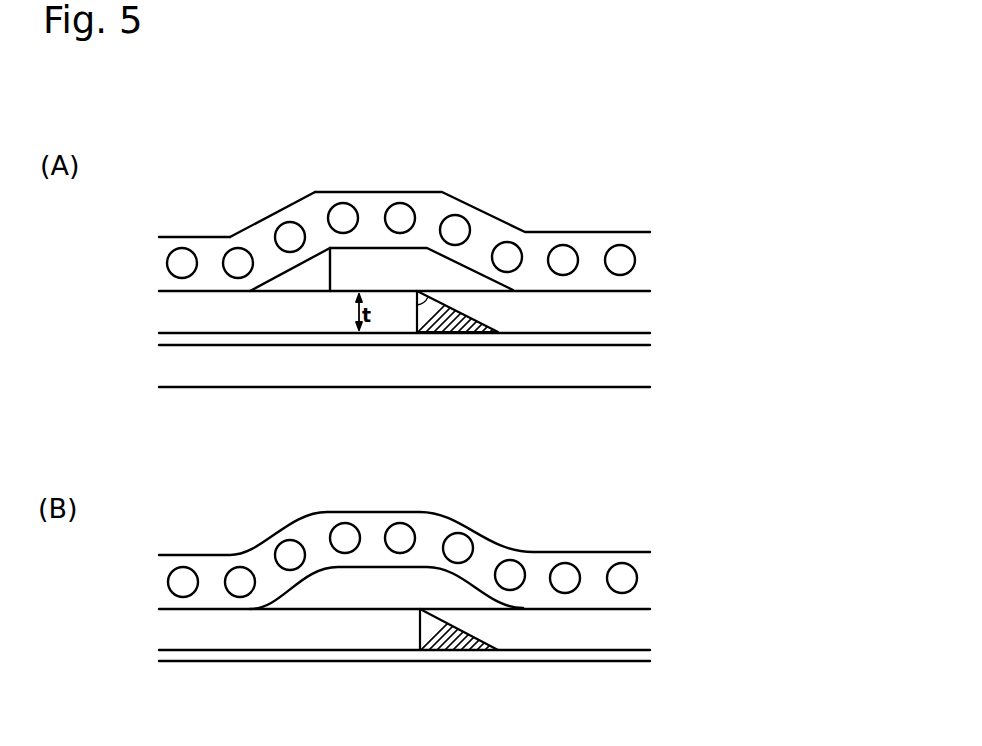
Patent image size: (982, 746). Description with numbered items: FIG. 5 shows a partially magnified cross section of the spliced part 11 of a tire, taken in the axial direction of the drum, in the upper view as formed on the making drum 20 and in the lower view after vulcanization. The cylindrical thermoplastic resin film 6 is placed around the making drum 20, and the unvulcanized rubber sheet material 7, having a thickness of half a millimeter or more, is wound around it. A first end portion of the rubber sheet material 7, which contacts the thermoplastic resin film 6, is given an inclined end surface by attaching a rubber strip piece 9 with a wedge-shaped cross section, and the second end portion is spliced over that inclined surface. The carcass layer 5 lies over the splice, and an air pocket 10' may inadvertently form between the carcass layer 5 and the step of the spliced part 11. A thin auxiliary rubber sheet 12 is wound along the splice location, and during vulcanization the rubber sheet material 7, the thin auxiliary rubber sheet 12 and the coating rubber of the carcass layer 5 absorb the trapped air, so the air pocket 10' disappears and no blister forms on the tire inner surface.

The carcass layer 5 is at (480, 246).
The air pocket 10' is at (280, 217).
The rubber sheet material 7 is at (587, 303).
The thermoplastic resin film 6 is at (240, 338).
The making drum 20 is at (193, 367).
The spliced part 11 is at (397, 268).
The rubber strip piece 9 is at (468, 330).
The thin auxiliary rubber sheet 12 is at (457, 643).